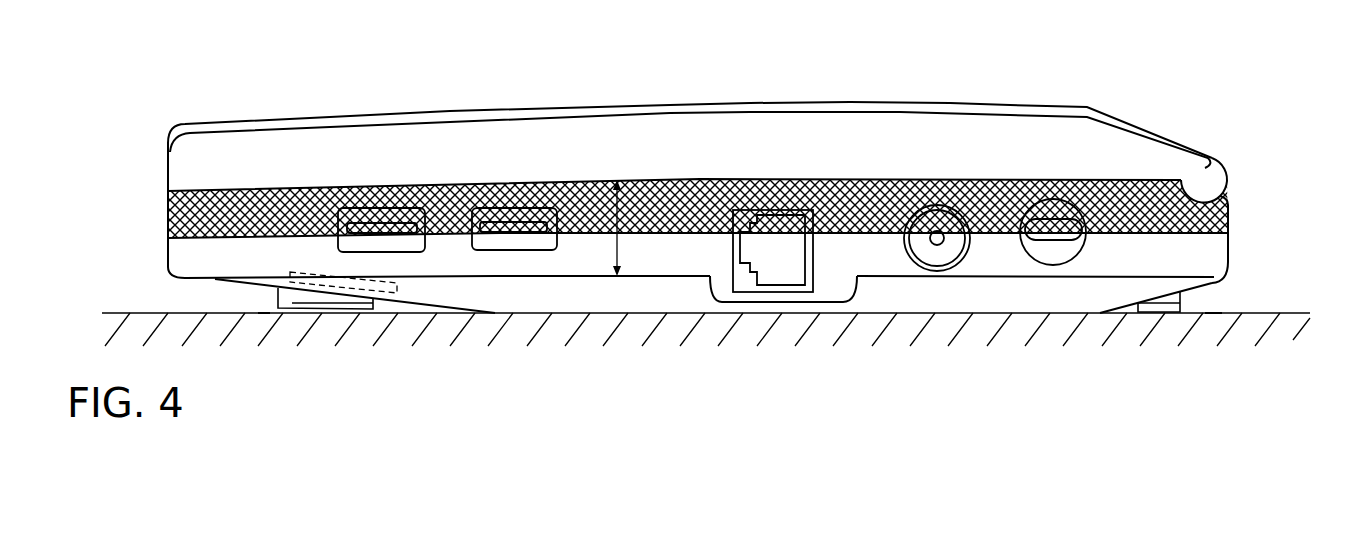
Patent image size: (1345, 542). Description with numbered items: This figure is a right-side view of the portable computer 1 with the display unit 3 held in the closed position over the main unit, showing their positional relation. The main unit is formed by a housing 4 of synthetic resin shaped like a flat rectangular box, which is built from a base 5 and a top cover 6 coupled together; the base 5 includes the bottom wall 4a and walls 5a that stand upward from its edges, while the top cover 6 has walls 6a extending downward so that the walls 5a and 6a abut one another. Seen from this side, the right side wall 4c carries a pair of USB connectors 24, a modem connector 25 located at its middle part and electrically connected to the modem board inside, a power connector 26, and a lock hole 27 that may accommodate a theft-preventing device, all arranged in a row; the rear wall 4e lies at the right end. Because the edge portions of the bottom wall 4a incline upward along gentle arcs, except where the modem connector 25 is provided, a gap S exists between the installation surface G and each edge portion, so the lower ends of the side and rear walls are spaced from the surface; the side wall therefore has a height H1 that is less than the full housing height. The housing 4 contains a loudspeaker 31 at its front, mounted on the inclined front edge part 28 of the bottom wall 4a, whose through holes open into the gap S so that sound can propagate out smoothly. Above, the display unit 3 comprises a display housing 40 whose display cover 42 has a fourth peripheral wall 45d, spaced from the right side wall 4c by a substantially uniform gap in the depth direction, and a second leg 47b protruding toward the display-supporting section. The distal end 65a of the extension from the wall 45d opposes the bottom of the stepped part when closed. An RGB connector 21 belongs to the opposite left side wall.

The portable computer 1 is at (1139, 91).
The display unit 3 is at (396, 110).
The housing 4 is at (1273, 197).
The bottom wall 4a is at (438, 309).
The right side wall 4c is at (682, 264).
The rear wall 4e is at (1224, 279).
The base 5 is at (1220, 247).
The walls 5a is at (849, 264).
The top cover 6 is at (1229, 211).
The walls 6a is at (903, 190).
The RGB connector 21 is at (582, 281).
The USB connectors 24 is at (448, 182).
The modem connector 25 is at (768, 277).
The power connector 26 is at (935, 245).
The lock hole 27 is at (1050, 240).
The inclined front edge part 28 is at (312, 290).
The loudspeaker 31 is at (388, 294).
The display housing 40 is at (1035, 105).
The display cover 42 is at (520, 125).
The fourth peripheral wall 45d is at (826, 127).
The second leg 47b is at (1207, 165).
The distal end 65a is at (652, 180).
The installation surface G is at (160, 313).
The height H1 is at (612, 254).
The gap S is at (260, 302).